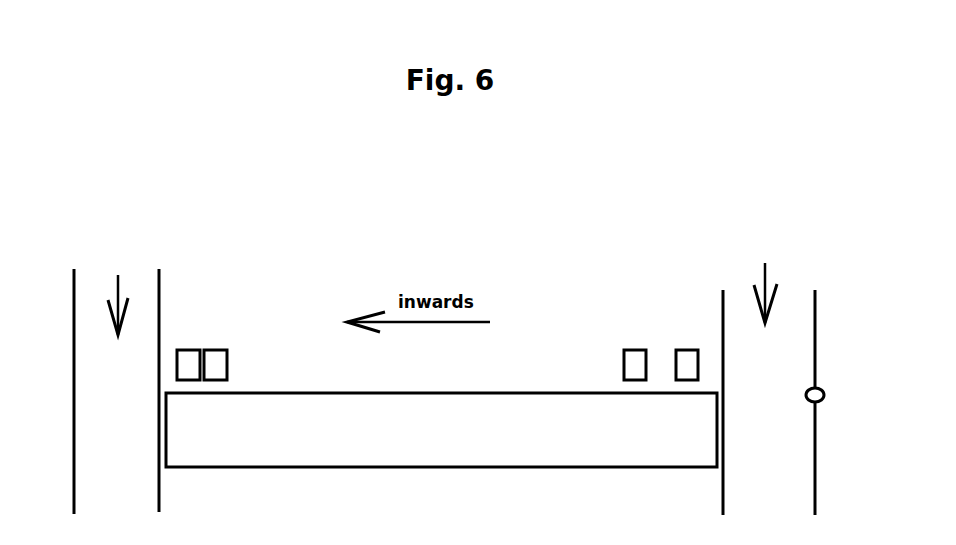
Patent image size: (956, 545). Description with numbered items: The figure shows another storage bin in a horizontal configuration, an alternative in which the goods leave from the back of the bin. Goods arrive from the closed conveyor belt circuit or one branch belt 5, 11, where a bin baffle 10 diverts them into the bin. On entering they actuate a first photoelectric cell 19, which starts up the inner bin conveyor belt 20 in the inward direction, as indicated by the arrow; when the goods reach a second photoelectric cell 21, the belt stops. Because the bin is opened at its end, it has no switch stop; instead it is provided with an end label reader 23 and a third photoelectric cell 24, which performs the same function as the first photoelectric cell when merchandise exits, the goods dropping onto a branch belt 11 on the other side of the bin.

The closed conveyor belt circuit 5 is at (810, 402).
The bin baffle 10 is at (834, 398).
The secondary conveyor belt (branch belt) 11 is at (116, 391).
The first photoelectric cell 19 is at (686, 343).
The inner bin conveyor belt 20 is at (441, 430).
The second photoelectric cell 21 is at (632, 343).
The end label reader 23 is at (185, 348).
The third photoelectric cell 24 is at (234, 367).